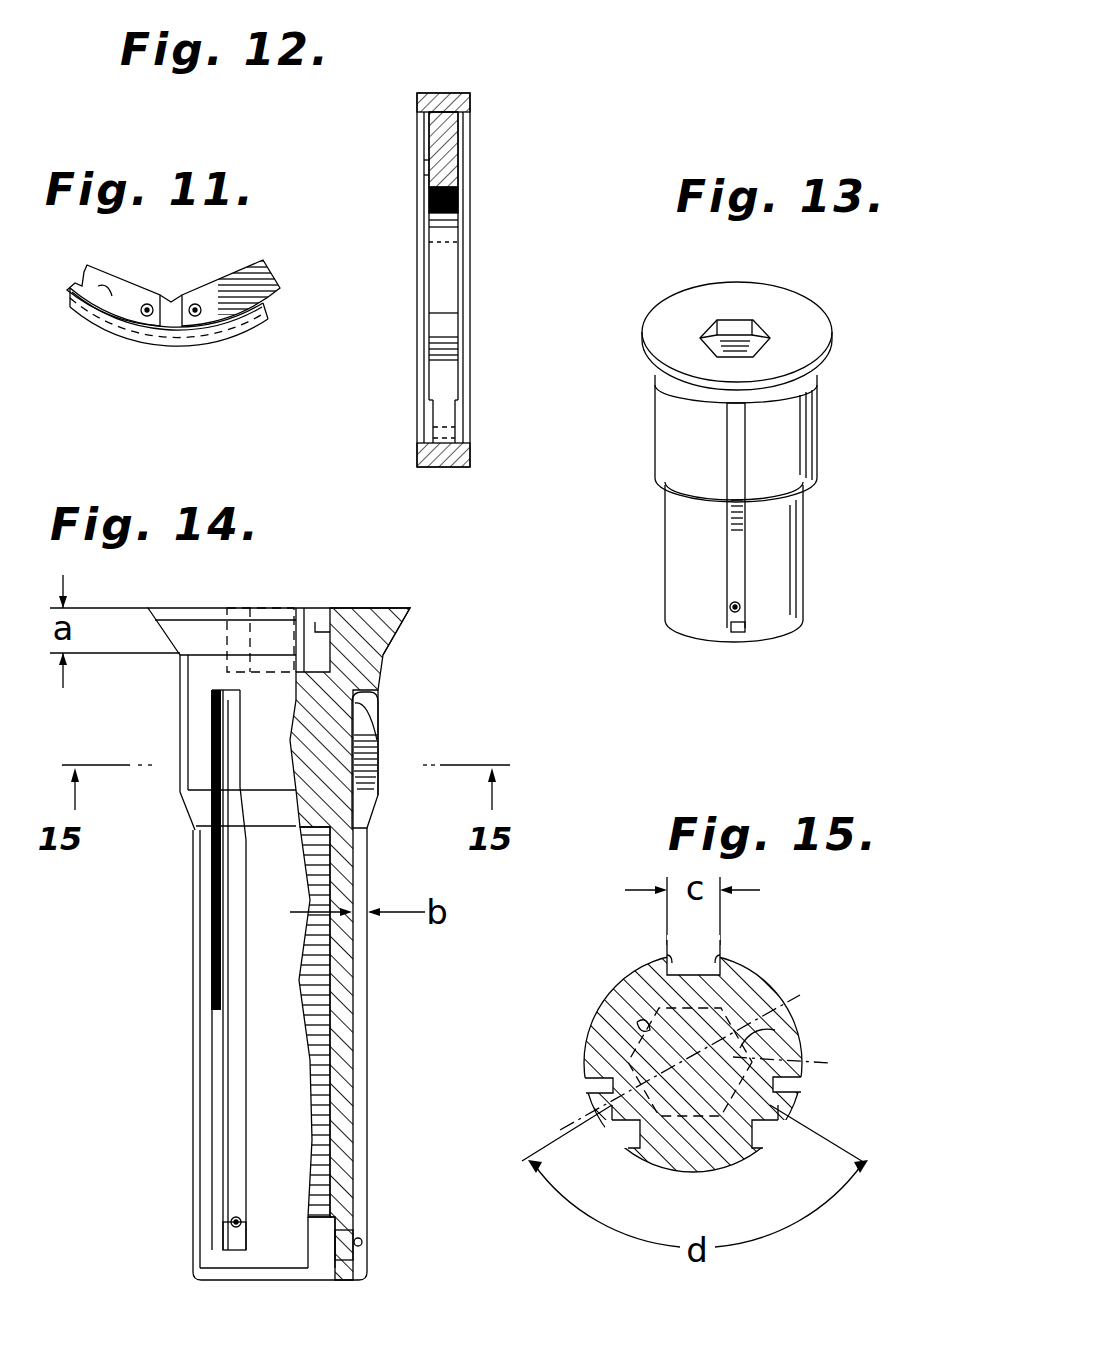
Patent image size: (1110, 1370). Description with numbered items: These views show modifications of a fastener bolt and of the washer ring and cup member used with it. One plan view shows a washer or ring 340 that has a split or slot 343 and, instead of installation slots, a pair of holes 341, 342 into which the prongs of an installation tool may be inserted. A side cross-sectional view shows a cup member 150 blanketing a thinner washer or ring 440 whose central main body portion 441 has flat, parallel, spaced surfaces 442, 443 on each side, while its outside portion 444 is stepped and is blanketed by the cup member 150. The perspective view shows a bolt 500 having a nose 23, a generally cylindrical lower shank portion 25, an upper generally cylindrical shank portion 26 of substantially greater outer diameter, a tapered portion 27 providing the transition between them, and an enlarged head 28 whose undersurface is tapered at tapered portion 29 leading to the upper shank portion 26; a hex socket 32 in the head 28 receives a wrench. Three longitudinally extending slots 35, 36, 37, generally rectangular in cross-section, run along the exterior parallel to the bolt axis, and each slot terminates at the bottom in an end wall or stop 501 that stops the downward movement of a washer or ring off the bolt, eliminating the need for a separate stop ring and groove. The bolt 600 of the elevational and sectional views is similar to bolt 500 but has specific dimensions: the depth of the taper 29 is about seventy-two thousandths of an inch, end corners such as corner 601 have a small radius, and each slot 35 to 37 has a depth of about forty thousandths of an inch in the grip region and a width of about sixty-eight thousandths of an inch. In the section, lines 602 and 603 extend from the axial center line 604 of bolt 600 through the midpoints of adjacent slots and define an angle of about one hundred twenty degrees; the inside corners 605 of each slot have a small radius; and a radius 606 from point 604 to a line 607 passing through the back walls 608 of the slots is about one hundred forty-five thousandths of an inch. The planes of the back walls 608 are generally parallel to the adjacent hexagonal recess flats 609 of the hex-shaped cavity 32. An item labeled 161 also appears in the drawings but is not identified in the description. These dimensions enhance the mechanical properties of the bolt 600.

In FIG. 13, the nose 23 is at (711, 645).
In FIG. 13, the lower shank portion 25 is at (800, 581).
In FIG. 14, the lower shank portion 25 is at (193, 1136).
In FIG. 13, the upper shank portion 26 is at (817, 432).
In FIG. 14, the upper shank portion 26 is at (180, 725).
In FIG. 13, the tapered portion 27 is at (772, 496).
In FIG. 14, the tapered portion 27 is at (188, 815).
In FIG. 13, the head 28 is at (656, 340).
In FIG. 14, the head 28 is at (410, 612).
In FIG. 13, the tapered portion 29 is at (693, 401).
In FIG. 14, the tapered portion 29 is at (385, 645).
In FIG. 13, the hex socket 32 is at (730, 321).
In FIG. 14, the hex socket 32 is at (315, 625).
In FIG. 15, the hex socket 32 is at (610, 1068).
In FIG. 15, the slot 35 is at (672, 962).
In FIG. 14, the slot 36 is at (355, 1045).
In FIG. 15, the slot 36 is at (790, 1110).
In FIG. 13, the slot 37 is at (727, 535).
In FIG. 14, the slot 37 is at (235, 1019).
In FIG. 15, the slot 37 is at (612, 1130).
In FIG. 11, the cup member 150 is at (225, 330).
In FIG. 12, the cup member 150 is at (419, 446).
In FIG. 13, the pin hole 161 is at (730, 607).
In FIG. 14, the pin hole 161 is at (231, 1223).
In FIG. 11, the washer or ring 340 is at (105, 317).
In FIG. 11, the hole 341 is at (147, 318).
In FIG. 11, the hole 342 is at (199, 306).
In FIG. 11, the split or slot 343 is at (163, 300).
In FIG. 12, the washer or ring 440 is at (472, 197).
In FIG. 12, the central main body portion 441 is at (465, 236).
In FIG. 12, the flat parallel surface 442 is at (424, 175).
In FIG. 12, the flat parallel surface 443 is at (465, 167).
In FIG. 12, the outside portion 444 is at (438, 93).
In FIG. 13, the bolt 500 is at (846, 380).
In FIG. 13, the end wall or stop 501 is at (739, 630).
In FIG. 14, the end wall or stop 501 is at (232, 1250).
In FIG. 14, the bolt 600 is at (243, 590).
In FIG. 15, the bolt 600 is at (660, 1190).
In FIG. 14, the end corner 601 is at (375, 745).
In FIG. 15, the line 602 is at (555, 1140).
In FIG. 15, the line 603 is at (866, 1160).
In FIG. 15, the axial center line 604 is at (790, 1000).
In FIG. 15, the inside corner 605 is at (714, 960).
In FIG. 15, the radius 606 is at (790, 1022).
In FIG. 15, the line 607 is at (830, 1063).
In FIG. 15, the back wall 608 is at (800, 1090).
In FIG. 15, the hexagonal recess flat 609 is at (600, 1015).